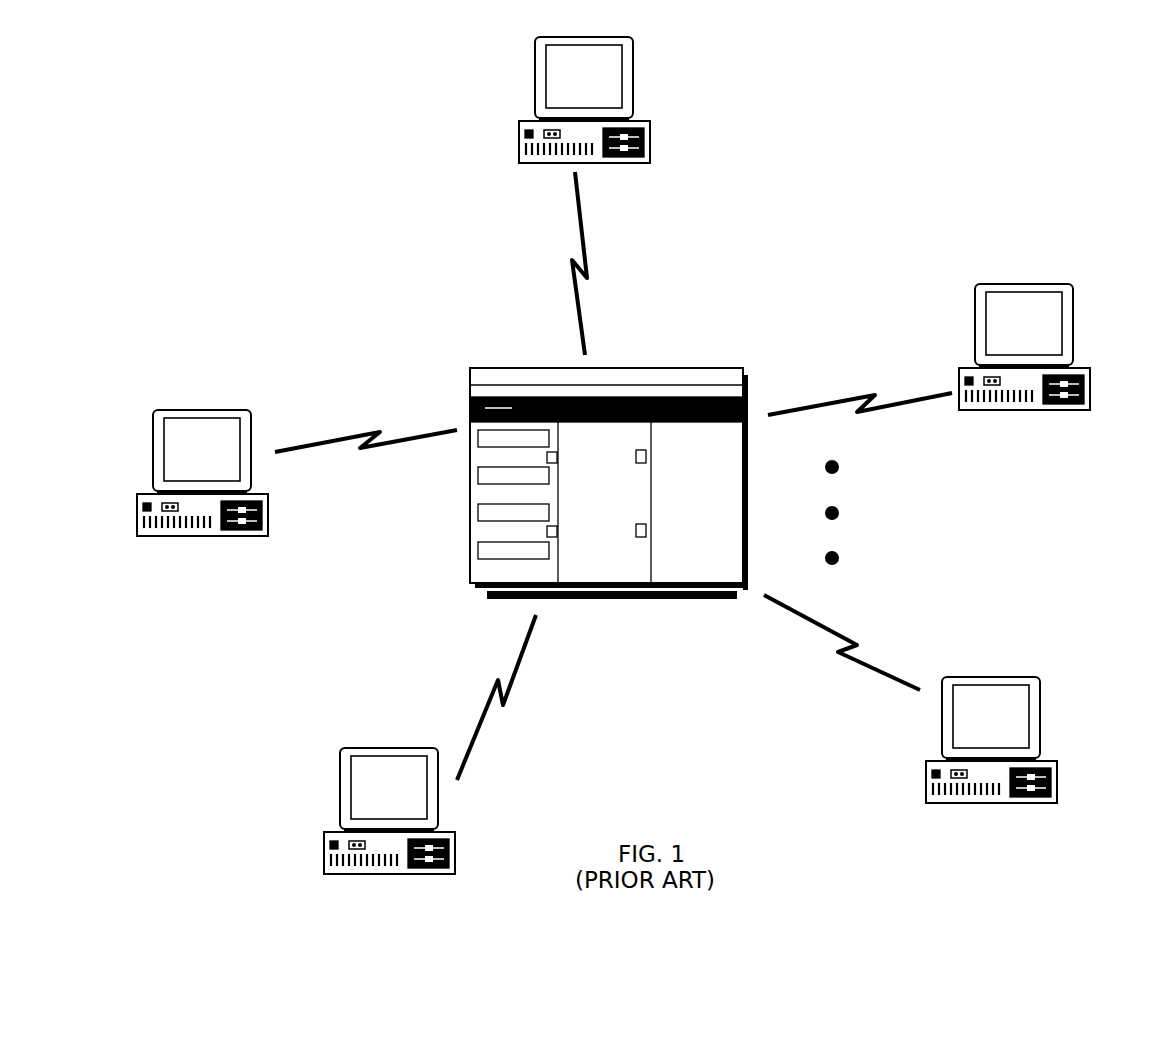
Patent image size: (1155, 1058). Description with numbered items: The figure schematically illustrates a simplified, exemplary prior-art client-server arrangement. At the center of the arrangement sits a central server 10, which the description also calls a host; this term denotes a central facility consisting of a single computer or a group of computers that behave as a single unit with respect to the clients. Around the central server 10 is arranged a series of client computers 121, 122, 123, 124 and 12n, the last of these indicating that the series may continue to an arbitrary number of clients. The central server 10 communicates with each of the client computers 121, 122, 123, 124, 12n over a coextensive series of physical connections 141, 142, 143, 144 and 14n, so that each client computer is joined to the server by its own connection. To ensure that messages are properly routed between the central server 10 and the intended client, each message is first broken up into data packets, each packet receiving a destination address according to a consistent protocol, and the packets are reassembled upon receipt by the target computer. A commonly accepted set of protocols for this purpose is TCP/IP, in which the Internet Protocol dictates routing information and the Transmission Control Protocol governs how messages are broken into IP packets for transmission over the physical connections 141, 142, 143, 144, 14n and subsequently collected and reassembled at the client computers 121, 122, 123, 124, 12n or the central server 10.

The central server 10 is at (630, 366).
The client computer 121 is at (340, 772).
The client computer 122 is at (172, 538).
The client computer 123 is at (650, 140).
The client computer 124 is at (1030, 413).
The client computer 12n is at (1042, 740).
The physical connection 141 is at (495, 680).
The physical connection 142 is at (338, 443).
The physical connection 143 is at (583, 250).
The physical connection 144 is at (840, 400).
The physical connection 14n is at (838, 660).